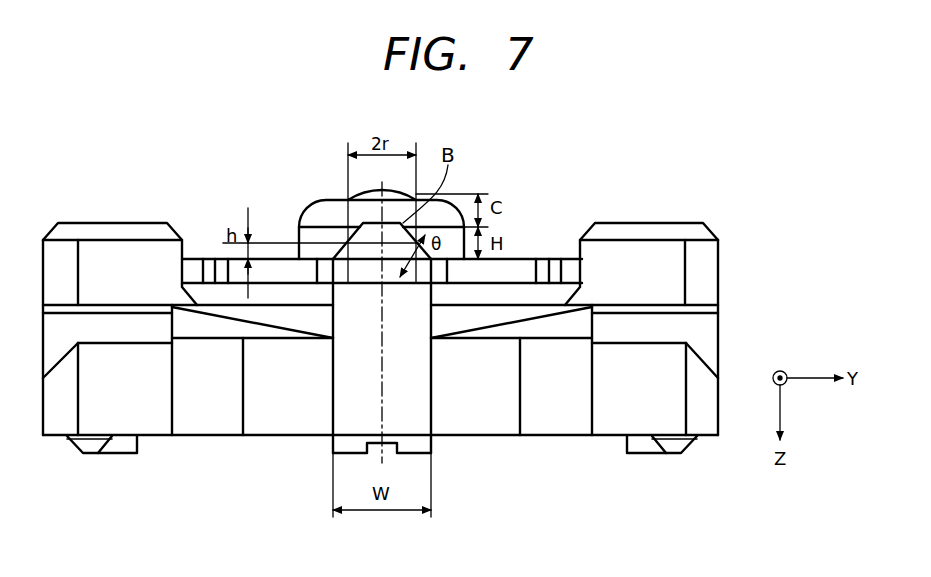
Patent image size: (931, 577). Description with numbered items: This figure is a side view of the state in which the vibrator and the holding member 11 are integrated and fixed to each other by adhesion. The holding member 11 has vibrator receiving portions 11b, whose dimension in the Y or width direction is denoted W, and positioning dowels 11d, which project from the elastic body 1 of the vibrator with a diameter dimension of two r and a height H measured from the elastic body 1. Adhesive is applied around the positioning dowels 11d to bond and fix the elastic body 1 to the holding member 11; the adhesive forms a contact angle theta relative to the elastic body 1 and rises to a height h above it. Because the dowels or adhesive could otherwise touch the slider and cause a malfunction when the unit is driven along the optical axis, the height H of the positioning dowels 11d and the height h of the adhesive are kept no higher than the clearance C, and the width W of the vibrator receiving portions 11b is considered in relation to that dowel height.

The elastic body 1 is at (514, 268).
The holding member 11 is at (703, 268).
The vibrator receiving portions 11b is at (367, 310).
The positioning dowels 11d is at (360, 237).